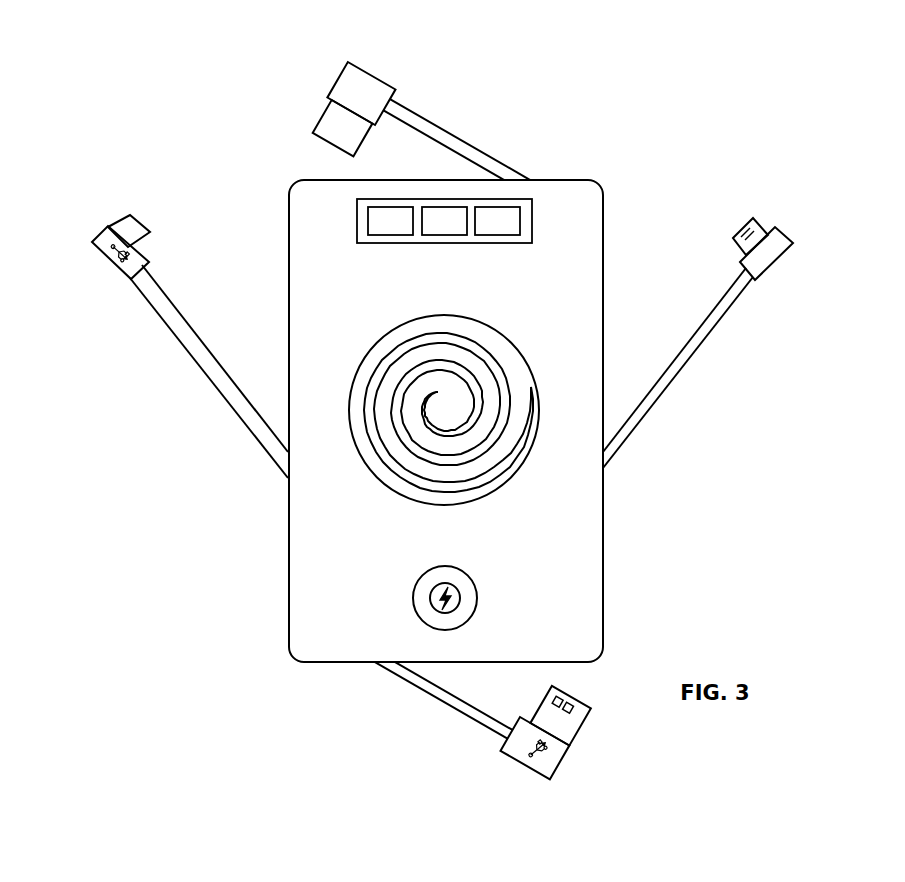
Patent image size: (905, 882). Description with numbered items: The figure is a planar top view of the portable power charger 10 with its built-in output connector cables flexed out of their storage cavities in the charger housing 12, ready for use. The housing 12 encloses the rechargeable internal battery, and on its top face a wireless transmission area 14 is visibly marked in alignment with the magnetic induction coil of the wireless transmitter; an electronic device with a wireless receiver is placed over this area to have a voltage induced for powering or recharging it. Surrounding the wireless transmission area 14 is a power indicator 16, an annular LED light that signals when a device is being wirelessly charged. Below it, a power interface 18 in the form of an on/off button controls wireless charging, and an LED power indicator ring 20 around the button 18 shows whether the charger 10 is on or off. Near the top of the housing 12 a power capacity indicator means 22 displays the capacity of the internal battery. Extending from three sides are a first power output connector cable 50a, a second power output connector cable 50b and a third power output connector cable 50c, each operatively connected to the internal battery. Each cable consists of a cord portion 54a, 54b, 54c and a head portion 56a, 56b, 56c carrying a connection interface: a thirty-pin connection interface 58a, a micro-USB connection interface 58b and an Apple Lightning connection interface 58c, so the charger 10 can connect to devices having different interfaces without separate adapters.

The portable power charger 10 is at (263, 283).
The charger housing 12 is at (358, 592).
The wireless transmission area 14 is at (508, 388).
The power indicator 16 is at (510, 463).
The power interface 18 is at (445, 605).
The LED power indicator ring 20 is at (462, 617).
The power capacity indicator means 22 is at (507, 195).
The first power output connector cable 50a is at (485, 107).
The second power output connector cable 50b is at (173, 390).
The third power output connector cable 50c is at (737, 350).
The cord portion 54a is at (433, 117).
The cord portion 54b is at (257, 420).
The cord portion 54c is at (668, 388).
The head portion 56a is at (372, 86).
The head portion 56b is at (102, 245).
The head portion 56c is at (792, 245).
The 30-pin connection interface 58a is at (333, 122).
The micro-USB connection interface 58b is at (125, 218).
The Apple Lightning connection interface 58c is at (753, 220).